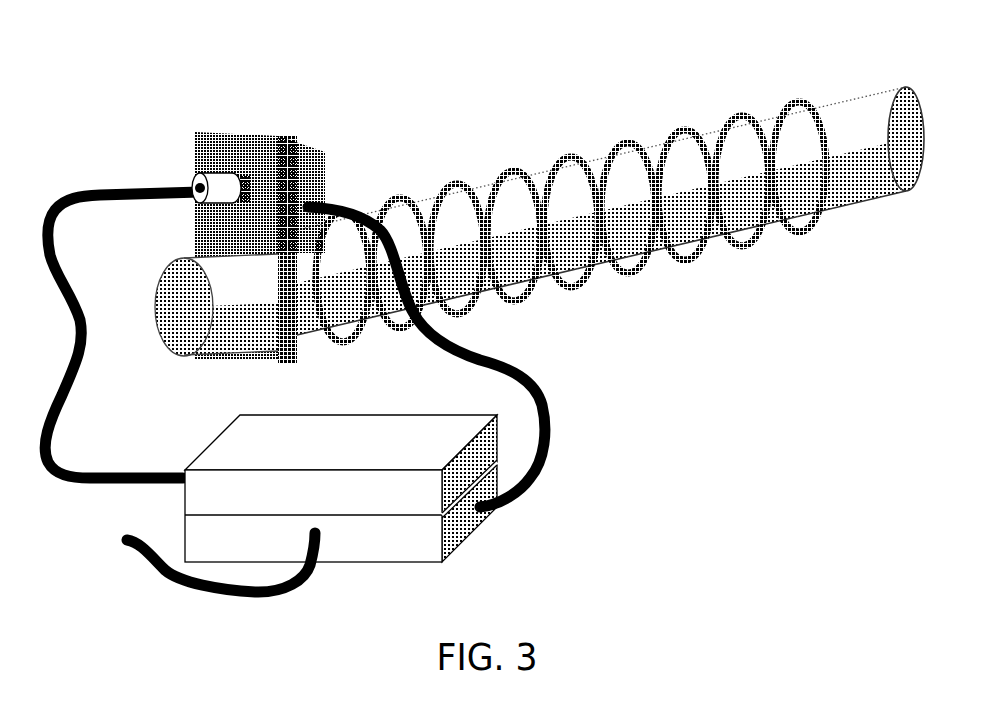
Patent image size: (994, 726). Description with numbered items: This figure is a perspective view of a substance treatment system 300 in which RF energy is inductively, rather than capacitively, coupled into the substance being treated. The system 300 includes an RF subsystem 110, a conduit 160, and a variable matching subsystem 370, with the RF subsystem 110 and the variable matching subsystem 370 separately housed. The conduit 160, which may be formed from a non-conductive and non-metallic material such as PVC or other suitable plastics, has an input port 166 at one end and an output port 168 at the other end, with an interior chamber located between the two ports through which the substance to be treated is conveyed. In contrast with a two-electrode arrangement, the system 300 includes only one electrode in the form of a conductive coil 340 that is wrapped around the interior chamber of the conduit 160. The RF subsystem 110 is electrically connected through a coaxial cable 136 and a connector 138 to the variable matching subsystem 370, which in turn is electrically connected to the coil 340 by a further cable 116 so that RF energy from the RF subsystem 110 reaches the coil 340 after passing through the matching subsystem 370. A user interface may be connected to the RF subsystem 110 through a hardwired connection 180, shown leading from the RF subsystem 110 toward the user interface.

The substance treatment system 300 is at (136, 79).
The RF subsystem 110 is at (415, 438).
The cable 116 is at (553, 415).
The coaxial cable 136 is at (88, 190).
The connector 138 is at (218, 178).
The conduit 160 is at (897, 182).
The input port 166 is at (188, 330).
The output port 168 is at (924, 104).
The connection 180 is at (300, 587).
The conductive coil 340 is at (630, 140).
The variable matching subsystem 370 is at (300, 143).